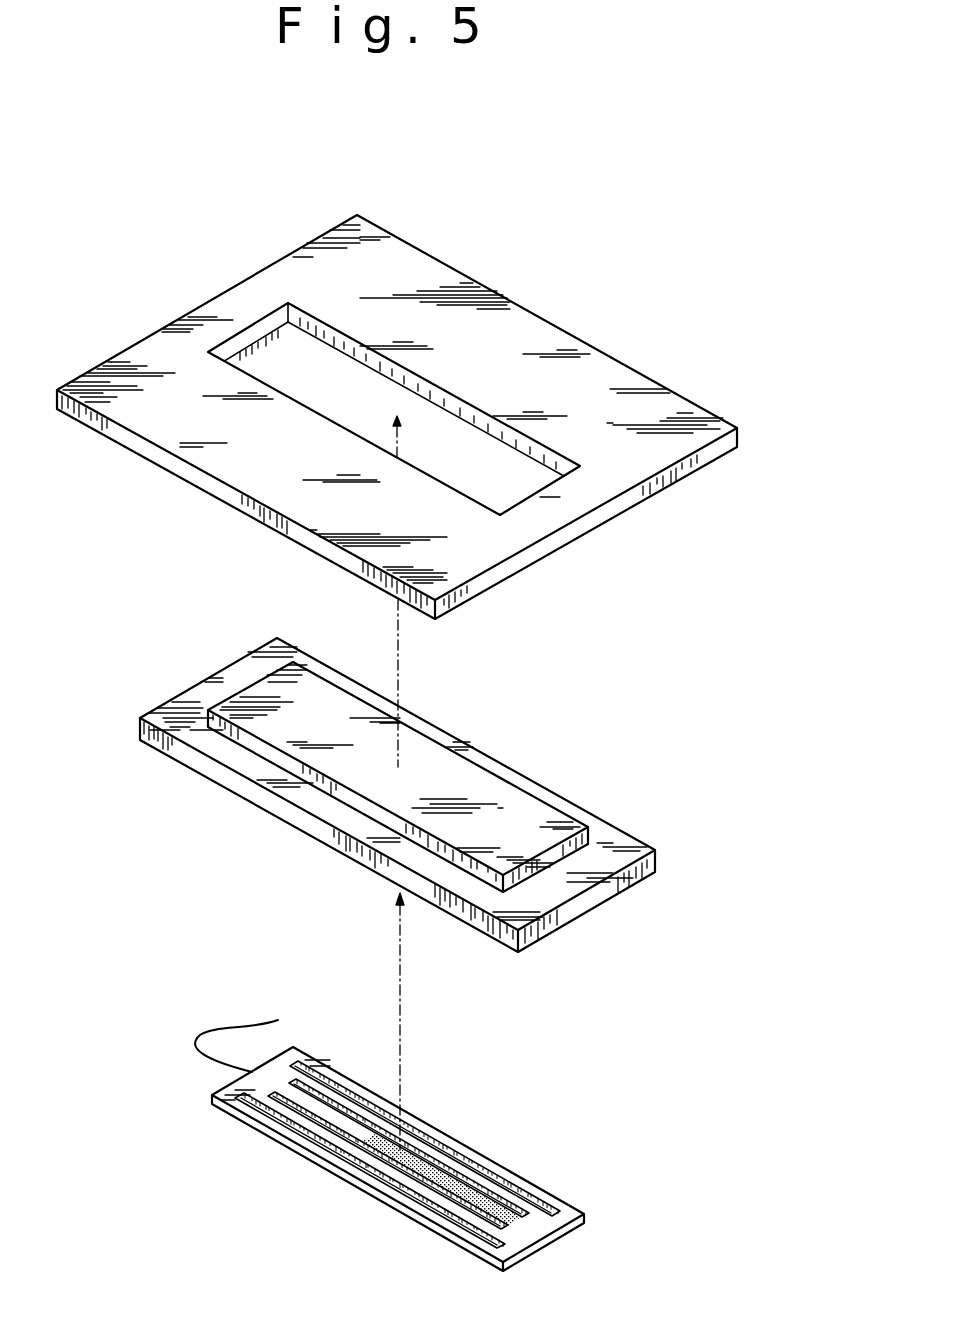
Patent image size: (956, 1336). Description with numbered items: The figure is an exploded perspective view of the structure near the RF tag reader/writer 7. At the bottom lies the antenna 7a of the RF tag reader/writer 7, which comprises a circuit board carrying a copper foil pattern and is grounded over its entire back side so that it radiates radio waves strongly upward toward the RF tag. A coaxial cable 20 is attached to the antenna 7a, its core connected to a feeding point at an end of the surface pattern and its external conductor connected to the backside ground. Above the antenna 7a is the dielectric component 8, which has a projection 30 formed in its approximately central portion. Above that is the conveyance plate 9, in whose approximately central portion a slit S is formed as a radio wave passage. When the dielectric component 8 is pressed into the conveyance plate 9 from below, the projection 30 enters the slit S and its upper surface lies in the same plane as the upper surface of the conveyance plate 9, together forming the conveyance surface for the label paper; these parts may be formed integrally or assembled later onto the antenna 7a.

The RF tag reader/writer 7 is at (399, 477).
The conveyance plate 9 is at (482, 300).
The slit S is at (282, 342).
The dielectric component 8 is at (152, 742).
The projection 30 is at (532, 817).
The coaxial cable 20 is at (248, 1027).
The antenna 7a is at (447, 1232).